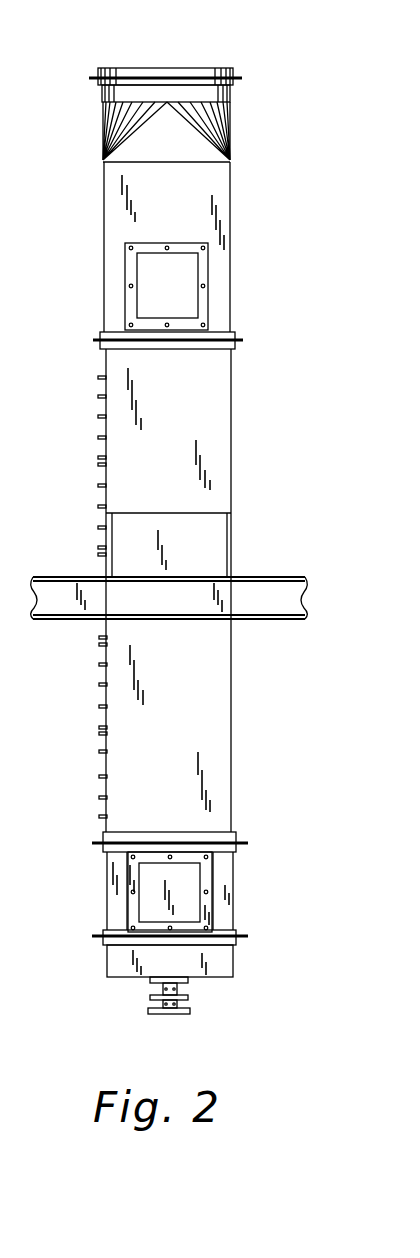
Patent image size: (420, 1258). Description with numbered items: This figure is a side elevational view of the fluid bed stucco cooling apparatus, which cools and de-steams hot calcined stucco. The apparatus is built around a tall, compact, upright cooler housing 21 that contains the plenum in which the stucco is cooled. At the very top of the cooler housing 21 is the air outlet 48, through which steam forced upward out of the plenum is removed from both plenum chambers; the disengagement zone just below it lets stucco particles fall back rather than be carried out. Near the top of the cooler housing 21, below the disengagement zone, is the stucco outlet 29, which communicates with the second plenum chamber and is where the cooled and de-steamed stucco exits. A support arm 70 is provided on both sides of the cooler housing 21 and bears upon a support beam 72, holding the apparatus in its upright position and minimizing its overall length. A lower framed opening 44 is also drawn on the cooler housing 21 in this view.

The air outlet 48 is at (165, 90).
The stucco outlet 29 is at (185, 278).
The support arm 70 is at (203, 543).
The support beam 72 is at (277, 623).
The cooler housing 21 is at (200, 725).
The lower window frame 44 is at (178, 898).